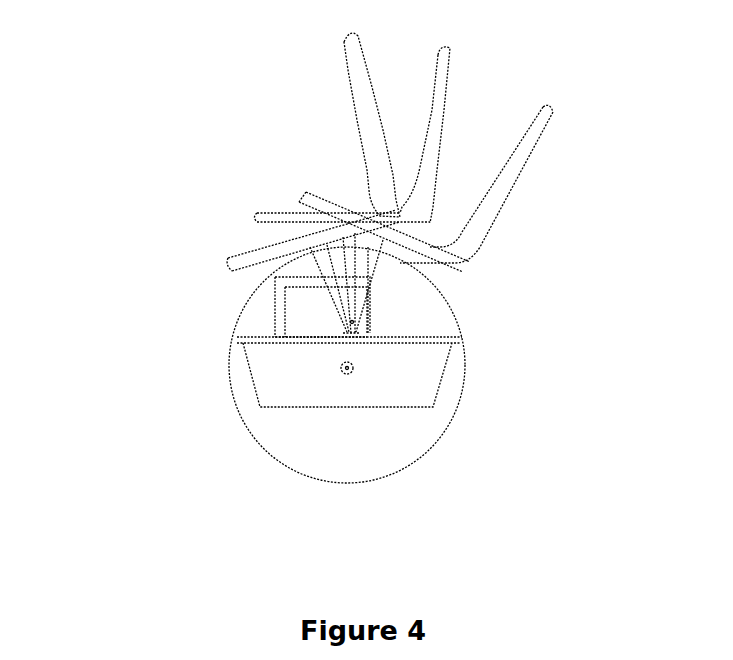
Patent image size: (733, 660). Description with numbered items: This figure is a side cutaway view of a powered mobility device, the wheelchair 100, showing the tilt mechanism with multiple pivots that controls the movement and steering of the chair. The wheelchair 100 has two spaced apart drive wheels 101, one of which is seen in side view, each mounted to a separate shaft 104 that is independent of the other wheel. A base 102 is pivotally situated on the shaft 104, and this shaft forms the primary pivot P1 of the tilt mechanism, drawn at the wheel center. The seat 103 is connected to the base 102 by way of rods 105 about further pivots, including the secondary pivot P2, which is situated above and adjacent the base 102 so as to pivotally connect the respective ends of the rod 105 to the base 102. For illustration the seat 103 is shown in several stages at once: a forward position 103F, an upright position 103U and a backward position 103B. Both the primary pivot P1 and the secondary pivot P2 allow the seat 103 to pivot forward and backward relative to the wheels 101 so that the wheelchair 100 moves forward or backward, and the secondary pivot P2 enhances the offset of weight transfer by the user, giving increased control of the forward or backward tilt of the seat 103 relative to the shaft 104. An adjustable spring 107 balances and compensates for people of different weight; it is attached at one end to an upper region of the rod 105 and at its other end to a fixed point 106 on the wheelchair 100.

The wheelchair 100 is at (148, 185).
The drive wheel 101 is at (410, 448).
The base 102 is at (425, 375).
The seat 103 is at (517, 180).
The seat forward position 103F is at (296, 58).
The seat upright position 103U is at (486, 62).
The seat backward position 103B is at (578, 150).
The shaft 104 is at (352, 373).
The rod 105 is at (382, 258).
The fixed point 106 is at (280, 305).
The adjustable spring 107 is at (322, 280).
The primary pivot P1 is at (329, 390).
The secondary pivot P2 is at (380, 335).